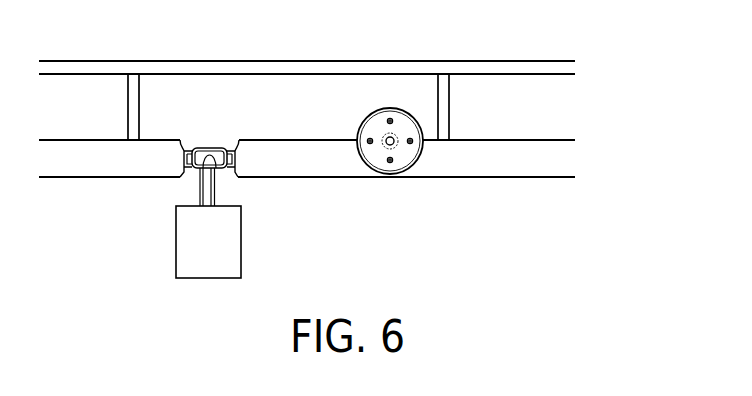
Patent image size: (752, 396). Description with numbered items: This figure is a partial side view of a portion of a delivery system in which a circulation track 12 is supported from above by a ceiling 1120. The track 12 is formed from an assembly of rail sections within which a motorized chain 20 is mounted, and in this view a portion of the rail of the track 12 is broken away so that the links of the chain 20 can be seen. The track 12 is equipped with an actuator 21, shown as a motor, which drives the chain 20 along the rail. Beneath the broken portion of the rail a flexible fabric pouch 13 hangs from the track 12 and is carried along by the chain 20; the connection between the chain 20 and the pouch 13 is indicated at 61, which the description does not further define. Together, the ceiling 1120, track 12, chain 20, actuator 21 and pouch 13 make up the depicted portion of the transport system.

The ceiling 1120 is at (563, 68).
The circulation track 12 is at (322, 168).
The chain 20 is at (206, 148).
The wires 61 is at (197, 183).
The flexible fabric pouch 13 is at (207, 268).
The actuator 21 is at (402, 158).